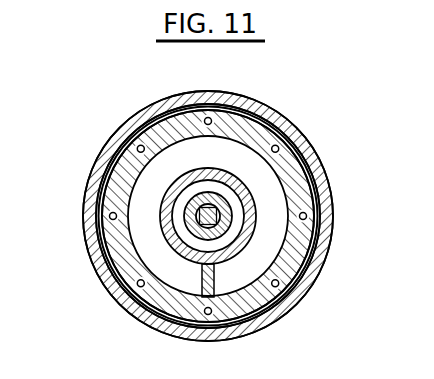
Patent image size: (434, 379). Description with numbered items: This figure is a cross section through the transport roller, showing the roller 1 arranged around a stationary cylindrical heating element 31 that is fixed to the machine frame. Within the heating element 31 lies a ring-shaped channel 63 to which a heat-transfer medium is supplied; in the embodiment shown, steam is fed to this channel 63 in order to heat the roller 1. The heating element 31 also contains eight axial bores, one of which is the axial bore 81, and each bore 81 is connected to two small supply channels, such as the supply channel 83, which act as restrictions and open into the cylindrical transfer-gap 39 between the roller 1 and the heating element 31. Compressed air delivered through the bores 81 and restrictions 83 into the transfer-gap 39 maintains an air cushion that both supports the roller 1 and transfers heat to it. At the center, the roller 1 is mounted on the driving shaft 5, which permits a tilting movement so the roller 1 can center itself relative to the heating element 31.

The roller 1 is at (313, 160).
The axial bore 81 is at (167, 105).
The supply channel 83 is at (110, 141).
The cylindrical transfer-gap 39 is at (270, 124).
The ring-shaped channel 63 is at (270, 198).
The cylindrical heating element 31 is at (302, 247).
The driving shaft 5 is at (205, 216).